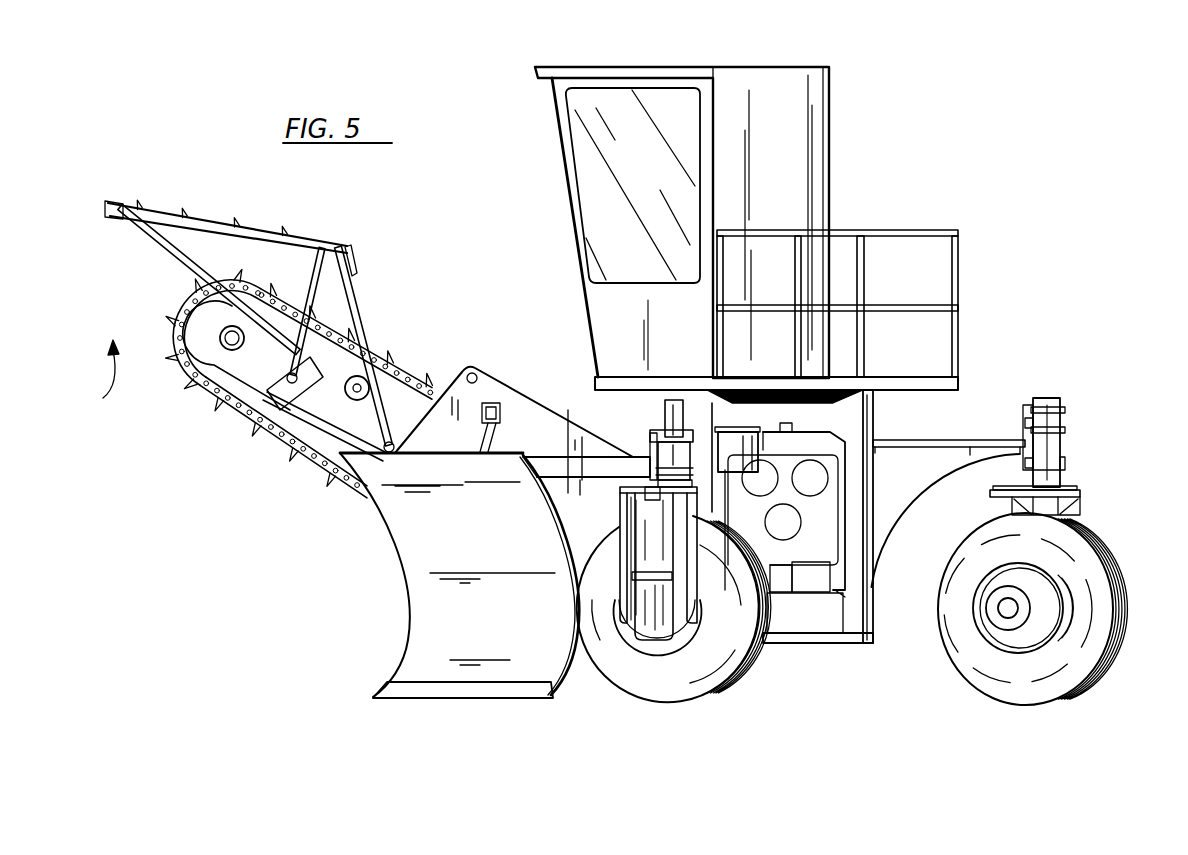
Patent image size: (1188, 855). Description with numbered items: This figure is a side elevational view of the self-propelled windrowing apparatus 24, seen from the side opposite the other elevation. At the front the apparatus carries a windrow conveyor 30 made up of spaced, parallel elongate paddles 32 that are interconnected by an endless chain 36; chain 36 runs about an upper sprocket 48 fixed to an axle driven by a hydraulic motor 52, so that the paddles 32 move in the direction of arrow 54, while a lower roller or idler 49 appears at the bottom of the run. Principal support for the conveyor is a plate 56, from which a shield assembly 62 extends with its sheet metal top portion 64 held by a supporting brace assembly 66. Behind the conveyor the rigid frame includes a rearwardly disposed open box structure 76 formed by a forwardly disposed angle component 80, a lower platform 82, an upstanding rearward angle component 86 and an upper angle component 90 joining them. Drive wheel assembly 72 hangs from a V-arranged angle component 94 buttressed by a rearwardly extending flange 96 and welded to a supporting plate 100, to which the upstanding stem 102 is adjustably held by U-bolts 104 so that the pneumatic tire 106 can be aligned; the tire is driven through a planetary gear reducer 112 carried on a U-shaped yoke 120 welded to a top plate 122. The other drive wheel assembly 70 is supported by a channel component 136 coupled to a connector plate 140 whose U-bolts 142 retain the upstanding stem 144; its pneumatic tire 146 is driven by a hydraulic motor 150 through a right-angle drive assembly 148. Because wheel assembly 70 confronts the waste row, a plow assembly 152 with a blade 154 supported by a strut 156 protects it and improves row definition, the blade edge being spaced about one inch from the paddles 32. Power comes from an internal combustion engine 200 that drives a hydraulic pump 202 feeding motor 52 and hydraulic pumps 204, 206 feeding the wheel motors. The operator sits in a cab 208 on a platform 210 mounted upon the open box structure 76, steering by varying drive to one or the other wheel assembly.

The windrowing apparatus 24 is at (506, 197).
The windrow conveyor 30 is at (465, 310).
The paddles 32 is at (170, 292).
The endless chain 36 is at (400, 363).
The upwardly disposed sprocket 48 is at (197, 383).
The idler roller 49 is at (330, 410).
The hydraulic motor 52 is at (207, 335).
The arrow 54 is at (98, 375).
The plate 56 is at (493, 395).
The shield assembly 62 is at (231, 221).
The sheet metal top portion 64 is at (277, 233).
The supporting brace assembly 66 is at (353, 300).
The drive wheel assembly 70 is at (689, 626).
The drive wheel assembly 72 is at (1034, 626).
The open box structure 76 is at (786, 643).
The forwardly disposed angle component 80 is at (700, 428).
The lower platform 82 is at (832, 636).
The upstanding rearward angle component 86 is at (873, 437).
The upper angle component 90 is at (787, 392).
The angle component 94 is at (930, 440).
The flange 96 is at (910, 490).
The supporting plate 100 is at (1033, 410).
The upstanding stem 102 is at (1062, 407).
The U-bolts 104 is at (1060, 462).
The pneumatic tire 106 is at (1083, 565).
The gear reducer 112 is at (1017, 637).
The U-shaped yoke 120 is at (1082, 503).
The top plate 122 is at (1070, 486).
The channel component 136 is at (567, 457).
The connector plate 140 is at (658, 430).
The U-bolts 142 is at (655, 443).
The upstanding stem 144 is at (667, 405).
The pneumatic tire 146 is at (717, 667).
The right-angle drive assembly 148 is at (652, 636).
The hydraulic motor 150 is at (647, 537).
The plow assembly 152 is at (400, 625).
The blade 154 is at (470, 670).
The strut 156 is at (493, 433).
The internal combustion engine 200 is at (795, 442).
The hydraulic pump 202 is at (778, 512).
The hydraulic pump 204 is at (768, 565).
The hydraulic pump 206 is at (817, 577).
The cab 208 is at (780, 77).
The platform 210 is at (895, 380).